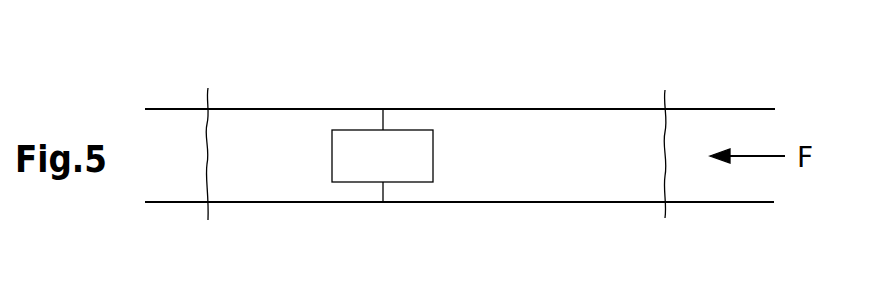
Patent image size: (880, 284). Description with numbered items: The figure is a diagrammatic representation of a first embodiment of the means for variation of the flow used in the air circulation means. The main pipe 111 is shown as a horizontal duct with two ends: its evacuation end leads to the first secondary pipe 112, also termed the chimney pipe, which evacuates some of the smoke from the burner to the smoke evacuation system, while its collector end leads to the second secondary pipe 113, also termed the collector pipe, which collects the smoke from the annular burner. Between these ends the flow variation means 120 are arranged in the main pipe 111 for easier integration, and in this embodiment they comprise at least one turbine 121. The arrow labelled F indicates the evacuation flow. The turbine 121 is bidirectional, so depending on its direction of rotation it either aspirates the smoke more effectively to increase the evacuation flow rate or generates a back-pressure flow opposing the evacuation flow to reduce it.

The main pipe 111 is at (578, 97).
The first secondary pipe 112 is at (167, 203).
The second secondary pipe 113 is at (745, 203).
The flow variation means 120 is at (367, 121).
The turbine 121 is at (408, 165).